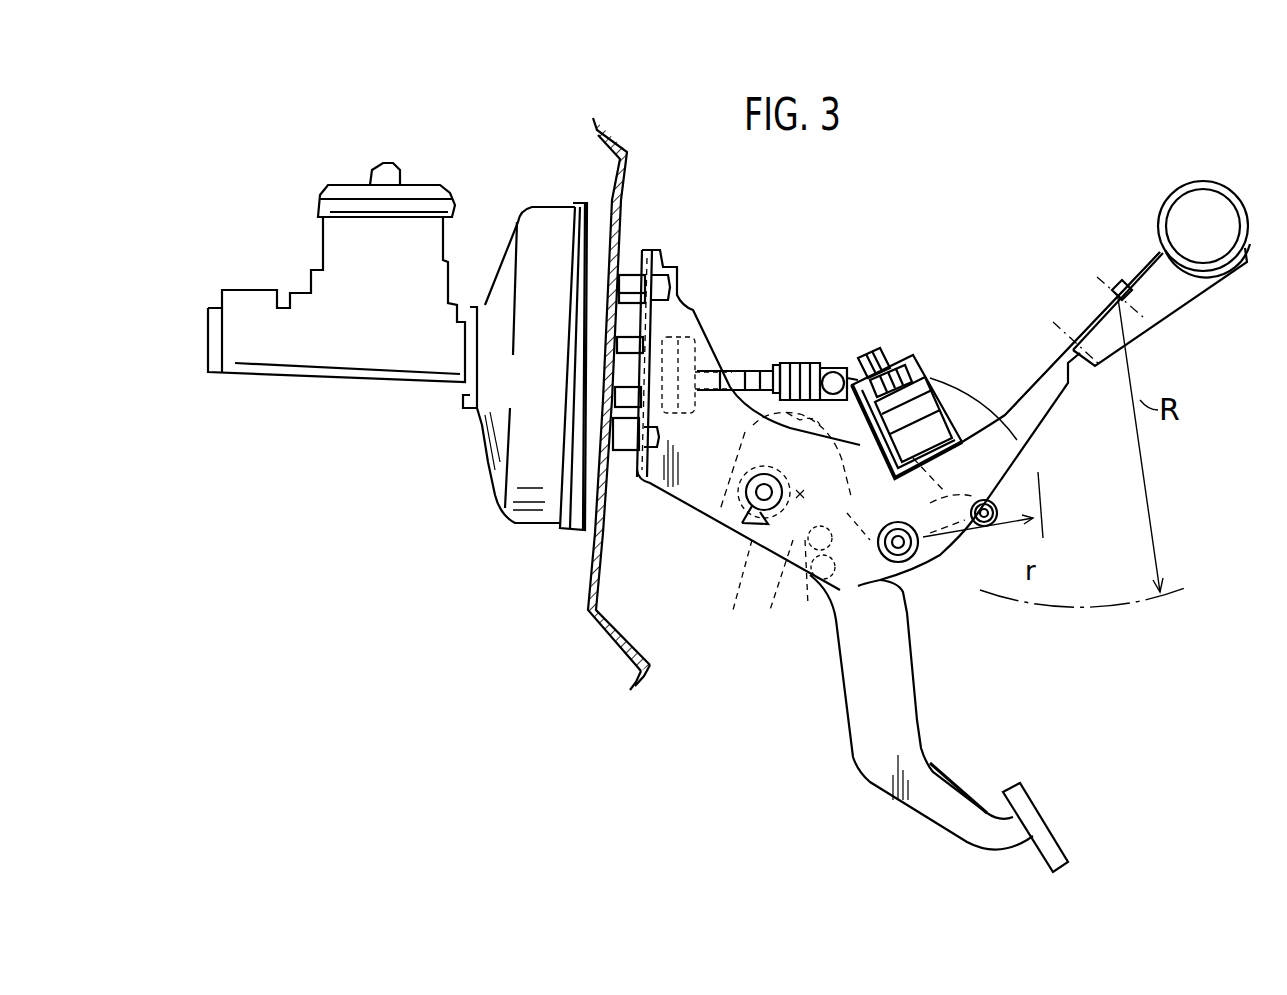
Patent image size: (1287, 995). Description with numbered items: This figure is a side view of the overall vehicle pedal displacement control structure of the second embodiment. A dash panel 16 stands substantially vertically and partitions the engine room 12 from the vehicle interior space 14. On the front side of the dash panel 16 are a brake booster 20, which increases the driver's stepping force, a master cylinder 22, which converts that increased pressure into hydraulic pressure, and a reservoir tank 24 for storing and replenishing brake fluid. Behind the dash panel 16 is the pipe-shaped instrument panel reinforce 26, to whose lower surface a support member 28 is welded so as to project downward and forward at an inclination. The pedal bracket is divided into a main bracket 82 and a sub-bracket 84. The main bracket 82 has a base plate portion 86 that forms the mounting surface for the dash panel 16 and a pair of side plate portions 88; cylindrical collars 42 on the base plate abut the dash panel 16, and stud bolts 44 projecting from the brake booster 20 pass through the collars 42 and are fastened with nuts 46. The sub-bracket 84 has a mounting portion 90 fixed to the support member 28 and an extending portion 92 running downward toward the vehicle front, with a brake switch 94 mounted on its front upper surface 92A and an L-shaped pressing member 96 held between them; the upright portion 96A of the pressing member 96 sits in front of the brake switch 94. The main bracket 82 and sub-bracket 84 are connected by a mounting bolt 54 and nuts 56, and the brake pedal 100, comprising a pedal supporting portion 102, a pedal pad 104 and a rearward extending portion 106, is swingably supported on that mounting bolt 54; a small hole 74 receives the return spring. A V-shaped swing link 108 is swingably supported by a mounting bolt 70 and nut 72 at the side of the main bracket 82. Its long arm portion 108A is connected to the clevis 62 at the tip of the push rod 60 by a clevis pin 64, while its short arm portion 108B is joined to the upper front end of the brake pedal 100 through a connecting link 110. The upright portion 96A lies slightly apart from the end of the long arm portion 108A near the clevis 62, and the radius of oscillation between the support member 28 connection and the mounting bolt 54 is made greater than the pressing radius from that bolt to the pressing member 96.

The engine room 12 is at (566, 677).
The vehicle interior space 14 is at (694, 677).
The dash panel 16 is at (628, 655).
The brake booster 20 is at (485, 440).
The master cylinder 22 is at (412, 365).
The reservoir tank 24 is at (335, 232).
The instrument panel reinforce 26 is at (1158, 228).
The support member 28 is at (1180, 300).
The cylindrical collar 42 is at (632, 280).
The stud bolt 44 is at (675, 298).
The nut 46 is at (677, 305).
The mounting bolt 54 is at (900, 575).
The nut 56 is at (905, 615).
The push rod 60 is at (777, 372).
The clevis 62 is at (815, 368).
The clevis pin 64 is at (842, 372).
The mounting bolt 70 is at (756, 482).
The nut 72 is at (744, 520).
The small hole 74 is at (985, 525).
The main bracket 82 is at (668, 505).
The sub-bracket 84 is at (1038, 368).
The base plate portion 86 is at (660, 258).
The side plate portion 88 is at (653, 483).
The mounting portion 90 is at (1097, 307).
The extending portion 92 is at (1058, 404).
The front upper surface 92A is at (1043, 360).
The brake switch 94 is at (940, 387).
The pressing member 96 is at (953, 430).
The upright portion 96A is at (847, 472).
The brake pedal 100 is at (838, 716).
The pedal supporting portion 102 is at (932, 787).
The pedal pad 104 is at (1030, 800).
The rearward extending portion 106 is at (1000, 503).
The swing link 108 is at (769, 575).
The long arm portion 108A is at (787, 413).
The short arm portion 108B is at (786, 598).
The connecting link 110 is at (815, 604).